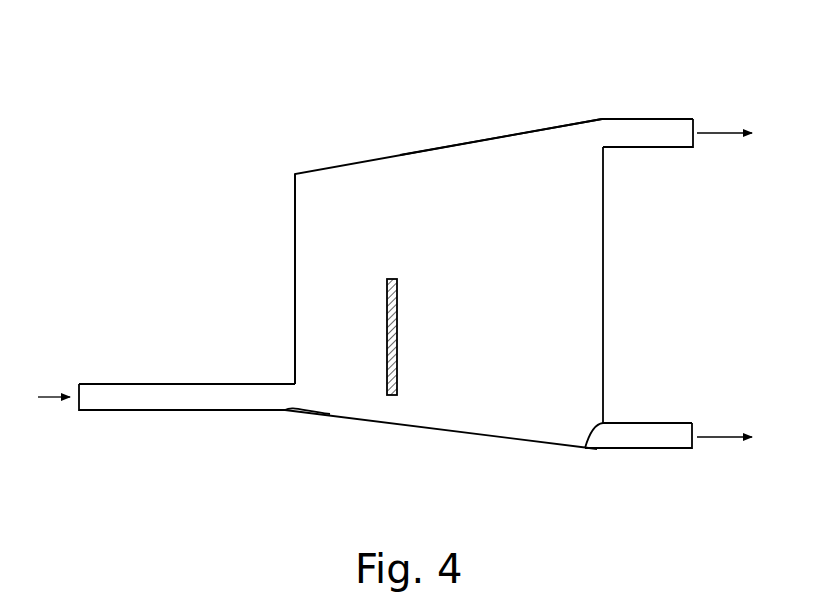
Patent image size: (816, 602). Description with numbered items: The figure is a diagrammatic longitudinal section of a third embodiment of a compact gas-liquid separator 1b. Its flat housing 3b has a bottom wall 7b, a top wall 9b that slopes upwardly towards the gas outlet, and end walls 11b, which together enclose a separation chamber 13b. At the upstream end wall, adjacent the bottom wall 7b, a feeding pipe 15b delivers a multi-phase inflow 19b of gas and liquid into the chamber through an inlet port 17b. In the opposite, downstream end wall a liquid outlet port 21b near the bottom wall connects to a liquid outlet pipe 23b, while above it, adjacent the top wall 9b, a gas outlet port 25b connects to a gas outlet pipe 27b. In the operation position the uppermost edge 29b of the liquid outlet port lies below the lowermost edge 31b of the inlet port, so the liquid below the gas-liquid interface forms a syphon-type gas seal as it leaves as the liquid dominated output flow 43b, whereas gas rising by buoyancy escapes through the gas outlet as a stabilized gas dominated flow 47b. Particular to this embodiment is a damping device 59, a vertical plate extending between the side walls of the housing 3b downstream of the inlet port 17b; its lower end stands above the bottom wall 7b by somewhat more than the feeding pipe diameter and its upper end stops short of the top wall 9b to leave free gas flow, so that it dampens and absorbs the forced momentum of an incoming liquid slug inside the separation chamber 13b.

The gas-liquid separator 1b is at (288, 110).
The housing 3b is at (385, 150).
The bottom wall 7b is at (466, 433).
The top wall 9b is at (440, 146).
The end walls 11b is at (294, 248).
The separation chamber 13b is at (310, 300).
The feeding pipe 15b is at (108, 411).
The inlet port 17b is at (282, 399).
The inflow 19b is at (50, 393).
The liquid outlet port 21b is at (613, 437).
The liquid outlet pipe 23b is at (672, 421).
The gas outlet port 25b is at (597, 130).
The gas outlet pipe 27b is at (664, 139).
The uppermost edge of liquid outlet port 29b is at (592, 438).
The lowermost edge of inlet port 31b is at (296, 409).
The output flow 43b is at (727, 432).
The gas dominated flow 47b is at (727, 130).
The damping device 59 is at (398, 346).